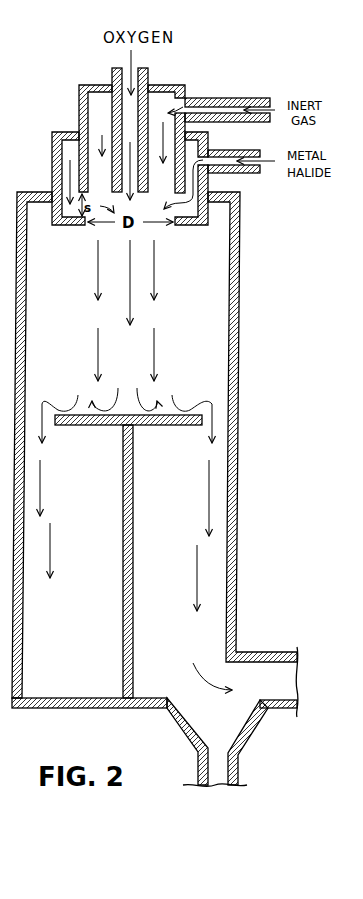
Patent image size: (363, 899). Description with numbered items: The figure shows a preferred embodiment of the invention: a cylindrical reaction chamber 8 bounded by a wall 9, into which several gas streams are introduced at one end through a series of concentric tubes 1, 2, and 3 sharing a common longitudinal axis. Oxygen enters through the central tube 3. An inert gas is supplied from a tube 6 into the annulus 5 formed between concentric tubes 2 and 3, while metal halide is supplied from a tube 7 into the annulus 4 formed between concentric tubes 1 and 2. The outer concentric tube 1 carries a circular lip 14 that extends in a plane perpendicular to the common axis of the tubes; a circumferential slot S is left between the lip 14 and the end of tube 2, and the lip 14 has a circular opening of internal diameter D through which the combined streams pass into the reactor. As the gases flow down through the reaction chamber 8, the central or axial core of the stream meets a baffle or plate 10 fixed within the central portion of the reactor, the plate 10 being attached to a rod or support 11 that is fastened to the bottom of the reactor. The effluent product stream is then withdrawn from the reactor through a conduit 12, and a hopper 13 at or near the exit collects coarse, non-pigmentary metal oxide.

The concentric tube 1 is at (52, 158).
The concentric tube 2 is at (79, 105).
The central tube 3 is at (112, 72).
The annulus 4 is at (75, 157).
The annulus 5 is at (105, 125).
The tube 6 is at (216, 99).
The tube 7 is at (240, 151).
The reaction chamber 8 is at (133, 363).
The wall 9 is at (239, 298).
The baffle or plate 10 is at (88, 425).
The rod or support 11 is at (123, 538).
The conduit 12 is at (282, 693).
The hopper 13 is at (182, 730).
The circular lip 14 is at (78, 227).